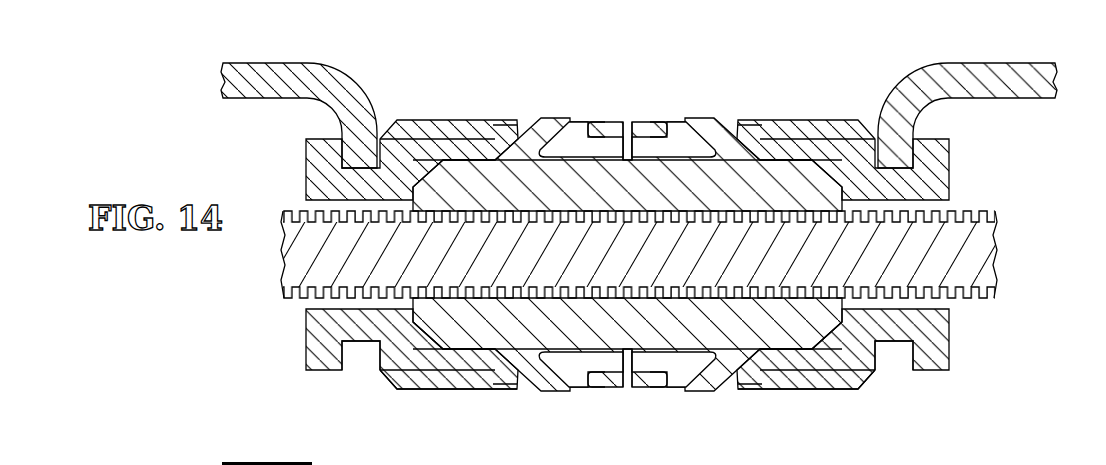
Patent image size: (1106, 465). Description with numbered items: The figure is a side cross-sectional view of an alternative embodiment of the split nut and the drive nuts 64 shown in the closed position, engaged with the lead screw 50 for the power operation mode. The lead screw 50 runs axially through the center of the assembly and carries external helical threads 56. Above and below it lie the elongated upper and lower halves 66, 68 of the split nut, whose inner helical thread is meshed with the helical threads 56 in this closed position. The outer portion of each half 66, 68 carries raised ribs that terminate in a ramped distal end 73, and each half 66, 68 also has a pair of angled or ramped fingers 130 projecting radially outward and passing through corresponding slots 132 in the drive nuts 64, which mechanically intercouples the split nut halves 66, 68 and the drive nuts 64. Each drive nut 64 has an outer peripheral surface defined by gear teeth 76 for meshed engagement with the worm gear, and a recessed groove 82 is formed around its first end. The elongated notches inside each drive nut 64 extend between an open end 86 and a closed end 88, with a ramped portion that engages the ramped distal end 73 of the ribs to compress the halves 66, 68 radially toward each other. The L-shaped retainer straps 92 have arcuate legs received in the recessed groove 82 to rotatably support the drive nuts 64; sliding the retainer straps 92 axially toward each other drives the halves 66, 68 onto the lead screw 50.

The lead screw 50 is at (997, 250).
The helical threads 56 is at (990, 297).
The drive nut 64 is at (603, 151).
The upper half 66 is at (468, 167).
The lower half 68 is at (455, 348).
The ramped distal end 73 is at (413, 187).
The gear teeth 76 is at (390, 382).
The recessed groove 82 is at (343, 362).
The open end 86 is at (624, 389).
The closed end 88 is at (422, 348).
The retainer strap 92 is at (248, 64).
The ramped fingers 130 is at (553, 118).
The slots 132 is at (587, 130).